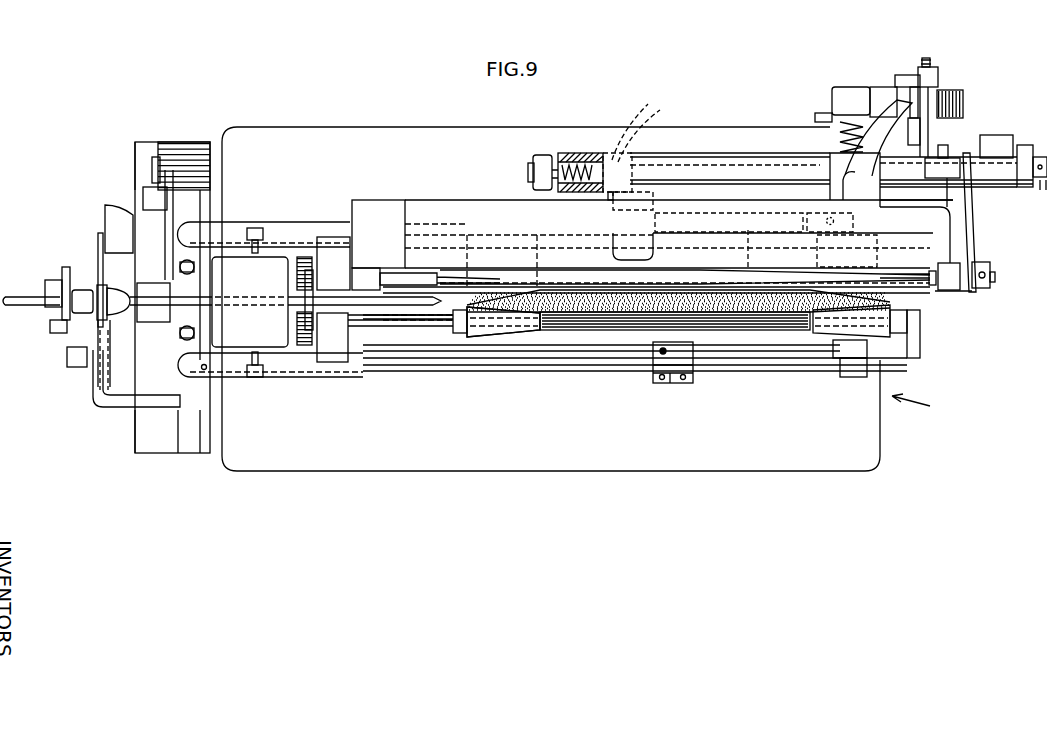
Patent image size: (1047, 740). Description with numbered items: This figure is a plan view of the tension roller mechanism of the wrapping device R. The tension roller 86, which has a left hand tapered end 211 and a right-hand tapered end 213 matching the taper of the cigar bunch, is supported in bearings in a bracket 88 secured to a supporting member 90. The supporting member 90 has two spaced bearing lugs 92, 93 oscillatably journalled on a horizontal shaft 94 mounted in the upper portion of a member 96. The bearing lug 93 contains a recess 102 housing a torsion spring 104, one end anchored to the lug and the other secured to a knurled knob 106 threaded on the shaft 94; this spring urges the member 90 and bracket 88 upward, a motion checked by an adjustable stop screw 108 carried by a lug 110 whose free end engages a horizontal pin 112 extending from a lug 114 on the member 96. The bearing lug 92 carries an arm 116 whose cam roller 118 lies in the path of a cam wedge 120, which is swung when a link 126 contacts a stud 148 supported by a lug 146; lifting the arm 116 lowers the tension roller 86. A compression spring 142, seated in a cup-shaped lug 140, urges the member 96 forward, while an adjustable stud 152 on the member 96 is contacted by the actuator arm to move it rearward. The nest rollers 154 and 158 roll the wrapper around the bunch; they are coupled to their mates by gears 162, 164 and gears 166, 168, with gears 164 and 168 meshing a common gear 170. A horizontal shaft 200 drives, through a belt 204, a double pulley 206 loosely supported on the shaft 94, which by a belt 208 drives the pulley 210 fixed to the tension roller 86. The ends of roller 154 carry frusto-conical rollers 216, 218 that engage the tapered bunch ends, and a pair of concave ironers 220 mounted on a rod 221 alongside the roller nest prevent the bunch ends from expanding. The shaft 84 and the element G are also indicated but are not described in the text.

The spindle shaft 84 is at (382, 303).
The tension roller 86 is at (563, 276).
The bracket 88 is at (433, 209).
The supporting member 90 is at (693, 193).
The bearing lug 92 is at (872, 187).
The bearing lug 93 is at (627, 163).
The horizontal shaft 94 is at (531, 177).
The member 96 is at (735, 176).
The recess 102 is at (587, 160).
The torsion spring 104 is at (577, 153).
The knurled knob 106 is at (537, 183).
The adjustable stop screw 108 is at (675, 100).
The lug 110 is at (646, 121).
The horizontal pin 112 is at (607, 198).
The lug 114 is at (660, 210).
The arm 116 is at (877, 150).
The cam roller 118 is at (915, 100).
The cam wedge 120 is at (947, 147).
The link 126 is at (925, 97).
The cup-shaped lug 140 is at (846, 92).
The compression spring 142 is at (817, 110).
The lug 146 is at (937, 83).
The stud 148 is at (933, 60).
The adjustable stud 152 is at (992, 148).
The roller 154 is at (588, 328).
The roller 158 is at (748, 232).
The gear 162 is at (303, 345).
The gear 164 is at (317, 345).
The gear 166 is at (298, 263).
The gear 168 is at (302, 256).
The common gear 170 is at (296, 333).
The horizontal shaft 200 is at (1046, 192).
The belt 204 is at (1033, 138).
The double pulley 206 is at (985, 174).
The belt 208 is at (970, 251).
The pulley 210 is at (964, 294).
The left hand tapered end 211 is at (466, 277).
The right-hand tapered end 213 is at (867, 278).
The frusto-conical roller 216 is at (837, 322).
The frusto-conical roller 218 is at (491, 331).
The concave ironers 220 is at (467, 291).
The rod 221 is at (447, 238).
The grinding wheel G is at (617, 308).
The wrapping device R is at (925, 407).